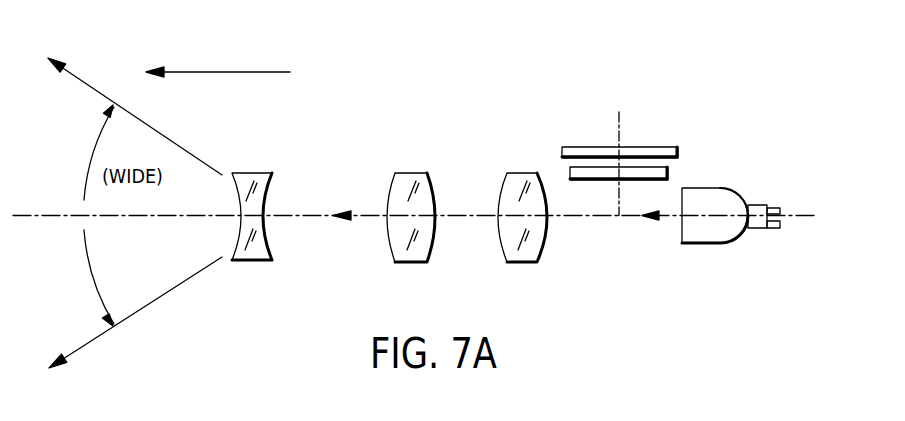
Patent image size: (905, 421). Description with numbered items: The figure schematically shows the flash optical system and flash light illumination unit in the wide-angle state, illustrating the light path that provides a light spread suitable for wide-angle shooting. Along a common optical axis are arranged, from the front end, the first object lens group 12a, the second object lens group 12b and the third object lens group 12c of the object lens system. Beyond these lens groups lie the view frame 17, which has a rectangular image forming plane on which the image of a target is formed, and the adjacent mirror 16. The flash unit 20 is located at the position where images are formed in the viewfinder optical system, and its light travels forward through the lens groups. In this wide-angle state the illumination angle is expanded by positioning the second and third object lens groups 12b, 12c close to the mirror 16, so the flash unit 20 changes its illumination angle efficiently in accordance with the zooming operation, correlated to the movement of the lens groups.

The first object lens group 12a is at (250, 173).
The second object lens group 12b is at (410, 172).
The third object lens group 12c is at (522, 172).
The mirror 16 is at (662, 172).
The view frame 17 is at (653, 147).
The flash unit 20 is at (702, 232).